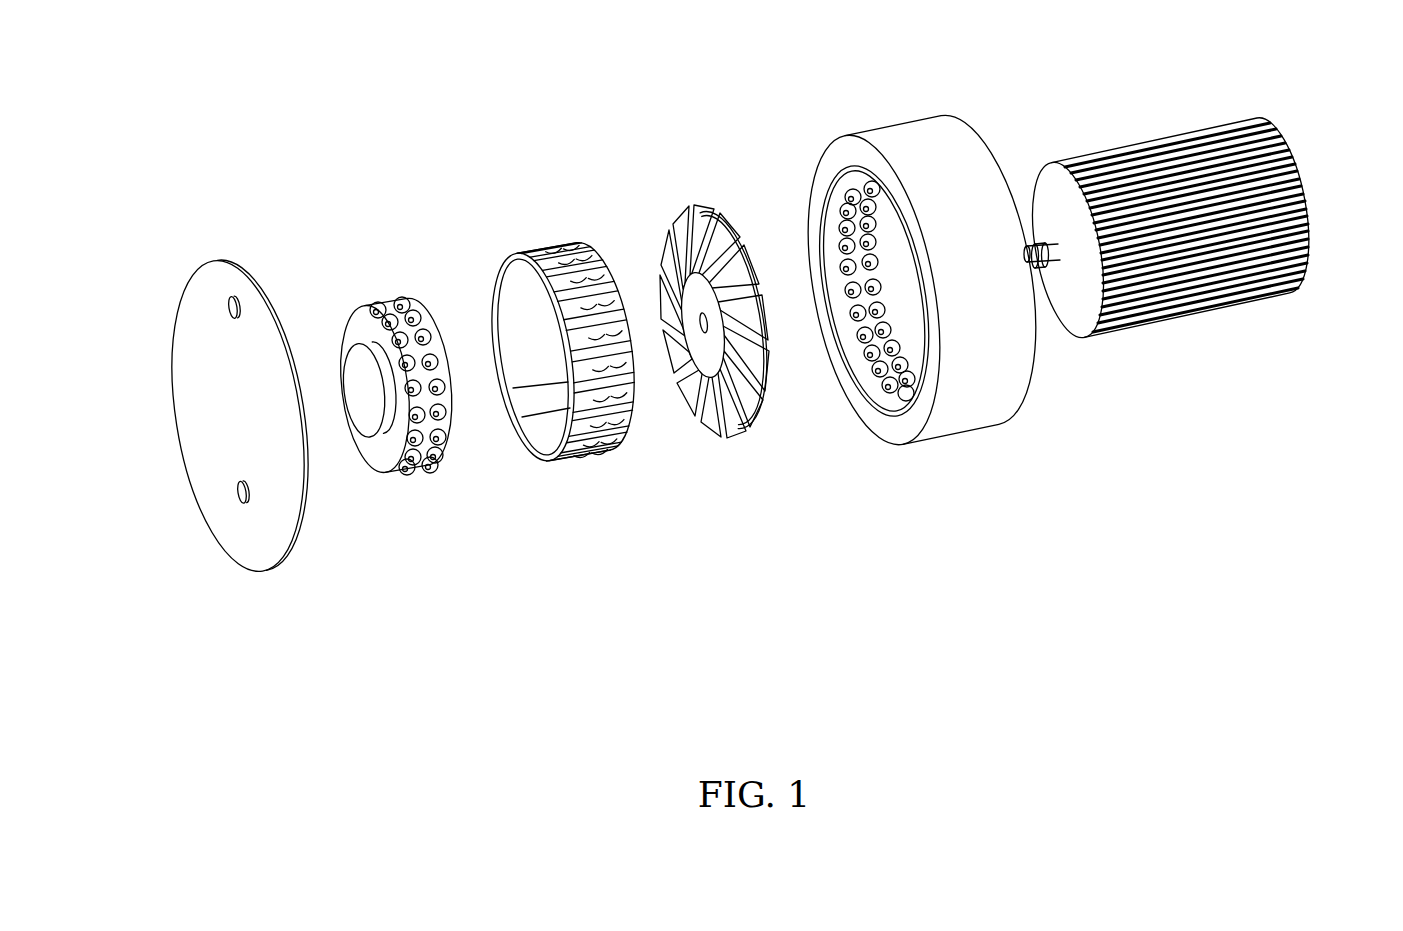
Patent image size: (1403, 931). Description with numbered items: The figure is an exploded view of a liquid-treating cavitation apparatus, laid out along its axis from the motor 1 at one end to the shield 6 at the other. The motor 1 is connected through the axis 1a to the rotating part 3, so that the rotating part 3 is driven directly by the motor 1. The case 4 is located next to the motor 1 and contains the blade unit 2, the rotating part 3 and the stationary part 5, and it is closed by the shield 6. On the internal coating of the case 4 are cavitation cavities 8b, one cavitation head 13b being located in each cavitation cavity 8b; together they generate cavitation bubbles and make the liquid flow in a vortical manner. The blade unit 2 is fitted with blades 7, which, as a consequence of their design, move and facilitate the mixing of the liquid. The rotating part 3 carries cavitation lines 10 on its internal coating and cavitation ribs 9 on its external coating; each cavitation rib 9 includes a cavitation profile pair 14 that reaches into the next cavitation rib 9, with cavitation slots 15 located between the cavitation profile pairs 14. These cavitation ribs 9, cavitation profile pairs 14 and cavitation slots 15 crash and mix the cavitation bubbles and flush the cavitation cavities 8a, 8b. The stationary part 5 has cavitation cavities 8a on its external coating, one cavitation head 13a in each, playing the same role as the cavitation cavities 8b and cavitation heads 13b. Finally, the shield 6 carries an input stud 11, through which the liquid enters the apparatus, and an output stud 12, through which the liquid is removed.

The motor 1 is at (1092, 293).
The axis 1a is at (1037, 247).
The blade unit 2 is at (700, 363).
The rotating part 3 is at (550, 458).
The case 4 is at (823, 445).
The stationary part 5 is at (351, 481).
The shield 6 is at (272, 525).
The blade 7 is at (697, 258).
The cavitation cavity 8a is at (447, 437).
The cavitation cavity 8b is at (841, 252).
The cavitation rib 9 is at (518, 256).
The cavitation line 10 is at (527, 400).
The input stud 11 is at (240, 482).
The output stud 12 is at (233, 300).
The cavitation head 13a is at (423, 336).
The cavitation head 13b is at (872, 290).
The cavitation profile pair 14 is at (588, 368).
The cavitation slot 15 is at (613, 330).